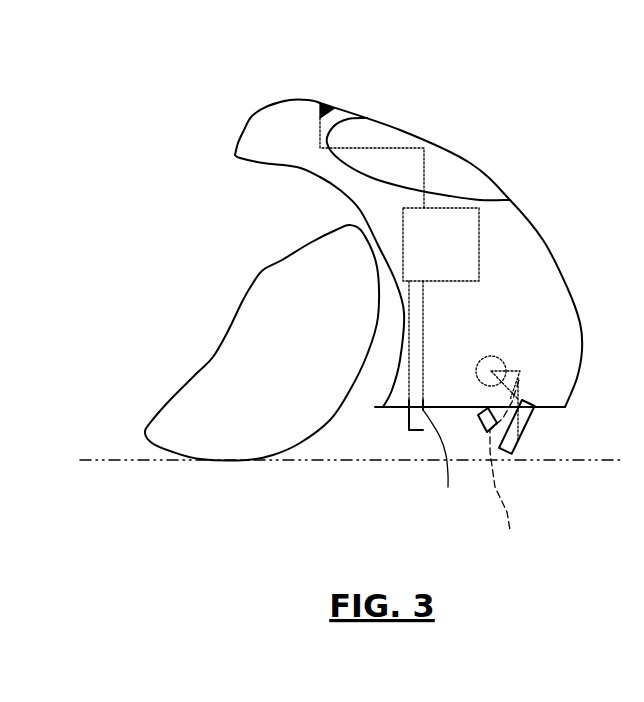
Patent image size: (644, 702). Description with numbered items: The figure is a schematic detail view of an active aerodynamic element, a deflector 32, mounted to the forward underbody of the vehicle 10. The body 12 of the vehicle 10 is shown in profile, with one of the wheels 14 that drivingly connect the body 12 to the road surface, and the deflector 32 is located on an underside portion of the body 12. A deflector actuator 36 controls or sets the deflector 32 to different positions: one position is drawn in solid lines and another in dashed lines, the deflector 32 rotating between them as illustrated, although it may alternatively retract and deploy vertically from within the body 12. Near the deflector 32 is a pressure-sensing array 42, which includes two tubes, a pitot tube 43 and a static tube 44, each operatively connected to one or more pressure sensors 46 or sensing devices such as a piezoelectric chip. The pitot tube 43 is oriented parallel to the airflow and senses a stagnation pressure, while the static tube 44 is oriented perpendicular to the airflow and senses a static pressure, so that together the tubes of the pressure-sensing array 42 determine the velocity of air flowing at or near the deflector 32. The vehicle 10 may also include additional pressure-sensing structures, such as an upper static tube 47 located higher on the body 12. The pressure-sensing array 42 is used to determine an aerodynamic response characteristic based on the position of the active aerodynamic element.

The vehicle 10 is at (530, 80).
The body 12 is at (270, 130).
The wheels 14 is at (223, 363).
The deflector 32 is at (513, 438).
The deflector actuator 36 is at (491, 356).
The pressure-sensing array 42 is at (447, 385).
The pitot tube 43 is at (415, 433).
The static tube 44 is at (442, 460).
The pressure sensors 46 is at (441, 304).
The upper static tube 47 is at (323, 113).